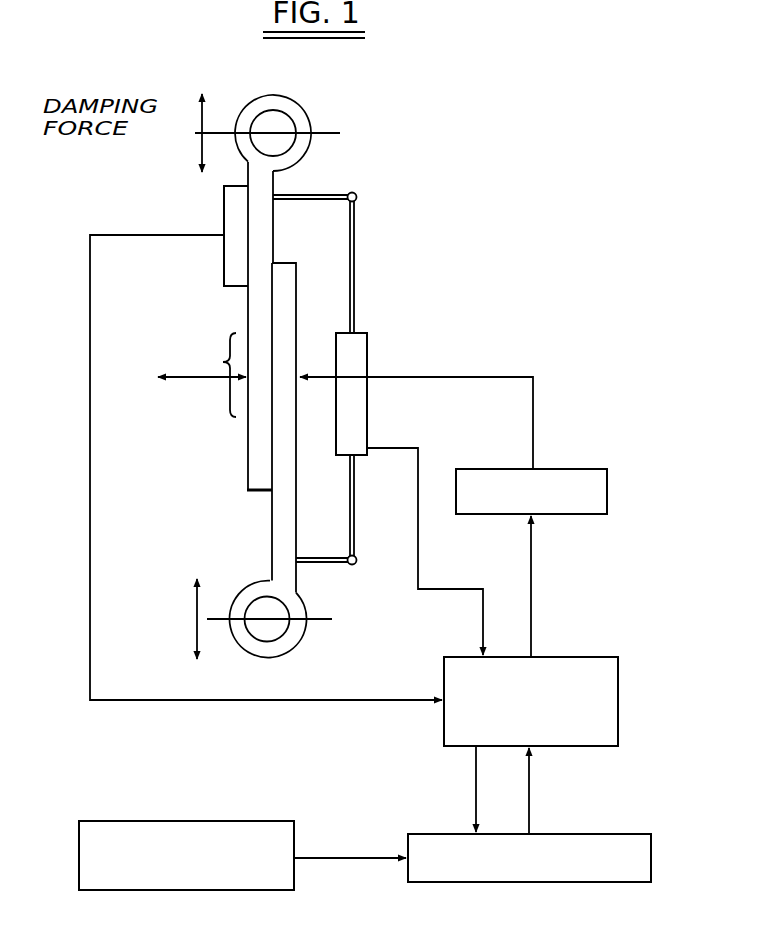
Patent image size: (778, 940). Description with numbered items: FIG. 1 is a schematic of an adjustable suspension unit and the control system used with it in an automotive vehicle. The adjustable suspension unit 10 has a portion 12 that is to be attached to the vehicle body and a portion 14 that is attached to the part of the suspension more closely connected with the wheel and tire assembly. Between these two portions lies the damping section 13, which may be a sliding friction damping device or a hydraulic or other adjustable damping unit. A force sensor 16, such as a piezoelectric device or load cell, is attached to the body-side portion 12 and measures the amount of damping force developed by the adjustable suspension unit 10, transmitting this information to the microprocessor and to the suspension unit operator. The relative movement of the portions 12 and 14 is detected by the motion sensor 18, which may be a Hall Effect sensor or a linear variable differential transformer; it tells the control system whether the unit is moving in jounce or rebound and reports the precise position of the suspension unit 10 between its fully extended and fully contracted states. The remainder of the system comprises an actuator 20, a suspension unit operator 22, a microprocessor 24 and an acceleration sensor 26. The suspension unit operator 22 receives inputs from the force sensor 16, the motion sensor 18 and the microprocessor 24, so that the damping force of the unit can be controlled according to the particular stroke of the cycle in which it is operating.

The adjustable suspension unit 10 is at (246, 310).
The portion 12 is at (275, 181).
The damping section 13 is at (222, 362).
The portion 14 is at (270, 538).
The force sensor 16 is at (224, 205).
The motion sensor 18 is at (367, 350).
The actuator 20 is at (582, 469).
The suspension unit operator 22 is at (608, 657).
The microprocessor 24 is at (630, 834).
The acceleration sensor 26 is at (277, 821).